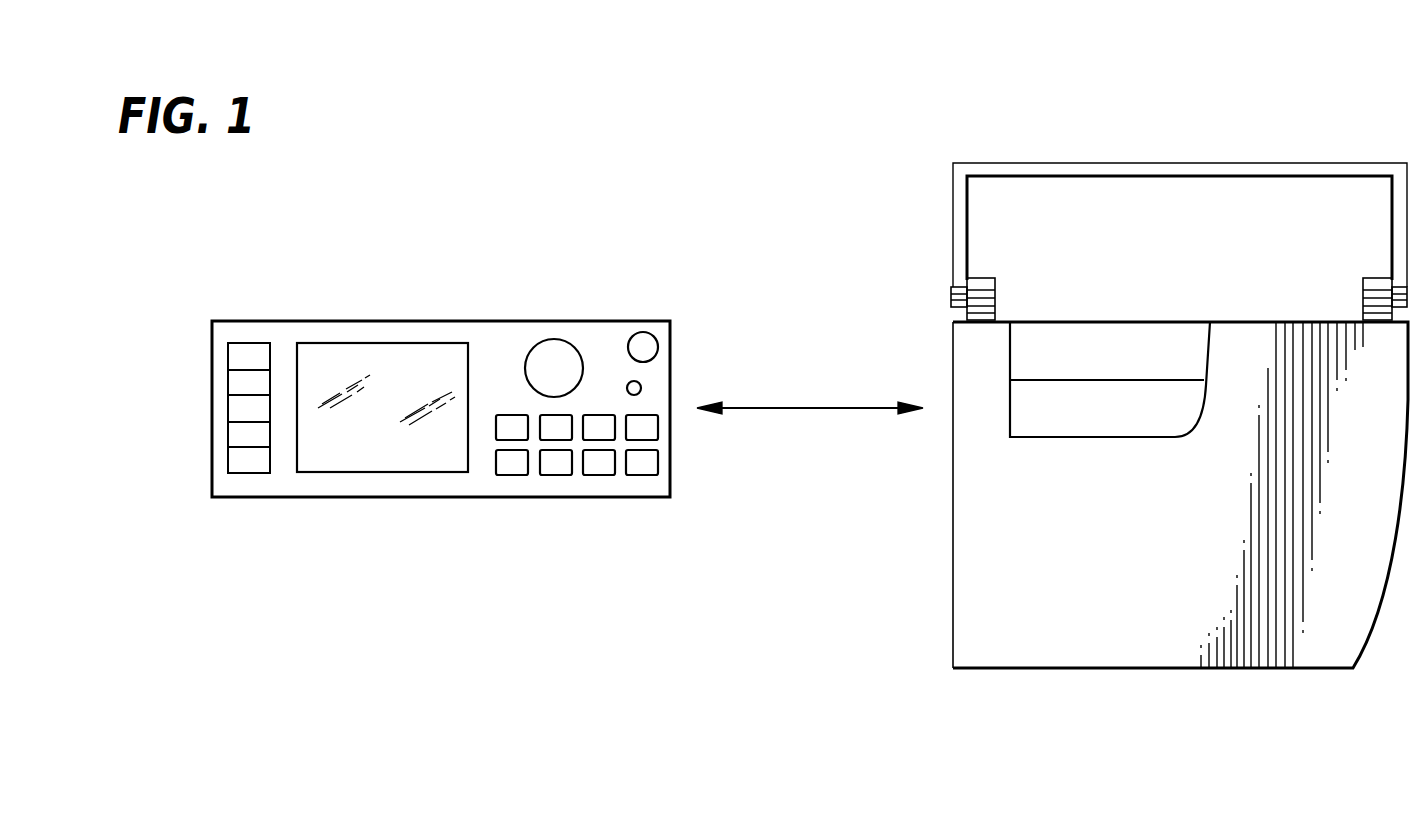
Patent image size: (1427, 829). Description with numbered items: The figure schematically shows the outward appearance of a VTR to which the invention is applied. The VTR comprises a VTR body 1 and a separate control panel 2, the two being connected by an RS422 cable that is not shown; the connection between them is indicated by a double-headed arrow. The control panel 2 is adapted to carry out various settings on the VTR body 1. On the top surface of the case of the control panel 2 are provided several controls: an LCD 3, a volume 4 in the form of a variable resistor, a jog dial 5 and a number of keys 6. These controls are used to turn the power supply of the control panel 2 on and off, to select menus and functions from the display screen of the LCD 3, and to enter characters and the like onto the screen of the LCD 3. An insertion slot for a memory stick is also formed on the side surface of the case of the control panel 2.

The VTR body 1 is at (1153, 668).
The control panel 2 is at (356, 523).
The LCD (liquid-crystal display) 3 is at (362, 352).
The volume (variable resistor) 4 is at (553, 345).
The jog dial 5 is at (640, 338).
The keys 6 is at (245, 345).